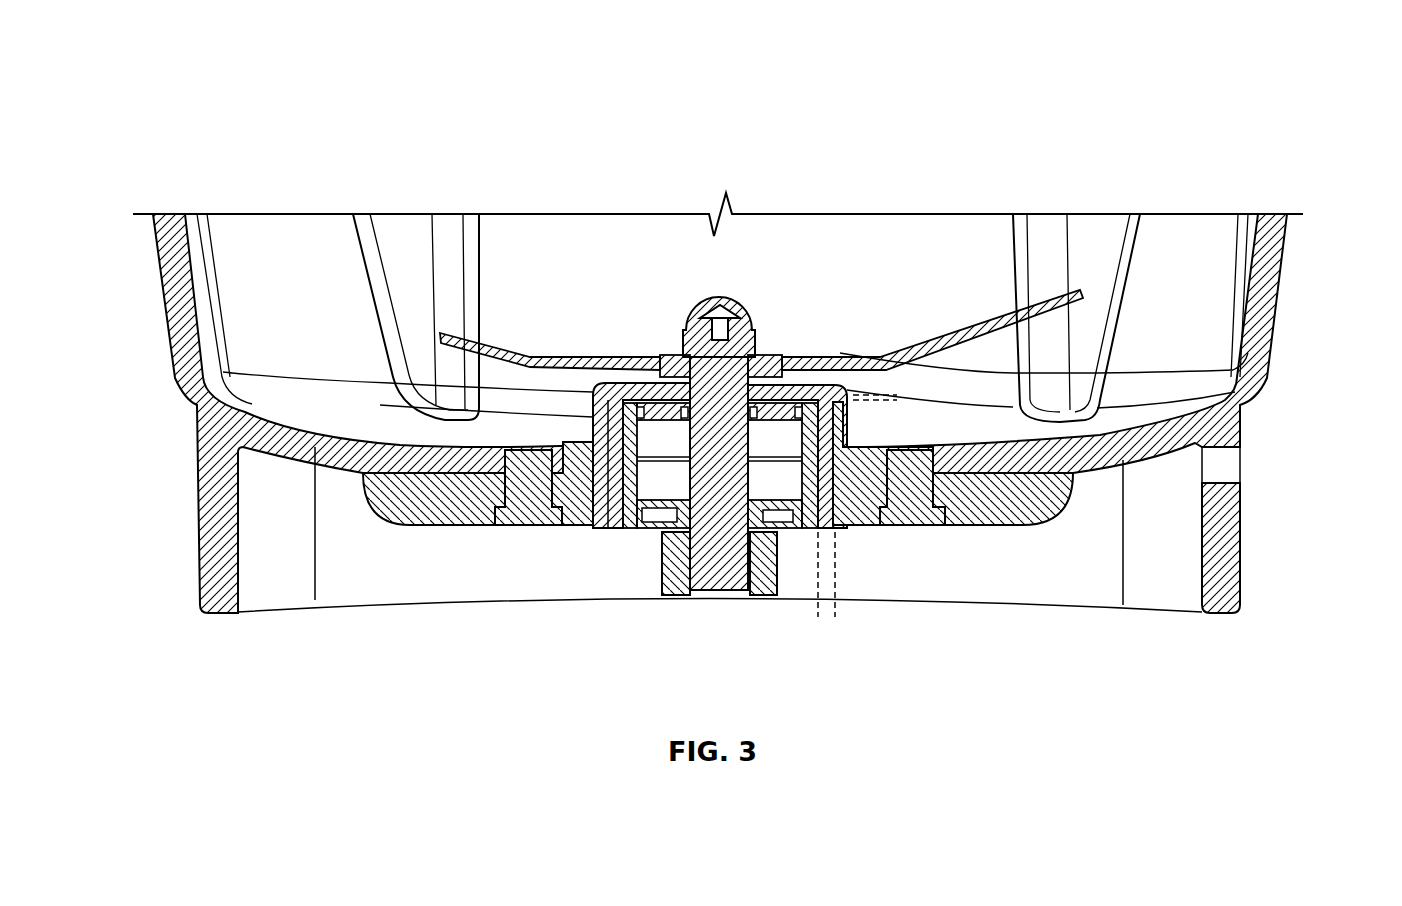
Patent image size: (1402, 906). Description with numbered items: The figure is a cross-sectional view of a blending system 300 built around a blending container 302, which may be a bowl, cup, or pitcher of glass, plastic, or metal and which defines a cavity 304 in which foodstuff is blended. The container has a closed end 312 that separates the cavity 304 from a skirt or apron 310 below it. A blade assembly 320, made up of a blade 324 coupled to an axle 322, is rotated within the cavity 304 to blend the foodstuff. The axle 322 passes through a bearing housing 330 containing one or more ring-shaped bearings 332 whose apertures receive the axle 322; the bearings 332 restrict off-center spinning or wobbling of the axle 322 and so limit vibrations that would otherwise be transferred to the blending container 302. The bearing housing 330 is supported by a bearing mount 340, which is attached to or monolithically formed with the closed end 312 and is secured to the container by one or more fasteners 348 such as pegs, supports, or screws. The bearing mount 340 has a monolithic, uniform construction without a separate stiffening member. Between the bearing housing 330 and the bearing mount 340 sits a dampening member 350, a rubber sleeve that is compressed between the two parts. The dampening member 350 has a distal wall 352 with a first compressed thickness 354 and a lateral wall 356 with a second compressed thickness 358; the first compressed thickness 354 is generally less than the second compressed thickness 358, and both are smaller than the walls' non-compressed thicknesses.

The blending system 300 is at (203, 98).
The blending container 302 is at (1258, 277).
The cavity 304 is at (1088, 237).
The skirt or apron 310 is at (220, 557).
The closed end 312 is at (1240, 457).
The blade assembly 320 is at (692, 298).
The axle 322 is at (748, 348).
The blade 324 is at (502, 345).
The bearing housing 330 is at (628, 500).
The bearings 332 is at (660, 443).
The bearing mount 340 is at (383, 484).
The fasteners 348 is at (517, 513).
The dampening member 350 is at (815, 505).
The distal wall 352 is at (788, 397).
The first compressed thickness 354 is at (897, 398).
The lateral wall 356 is at (833, 493).
The second compressed thickness 358 is at (827, 615).